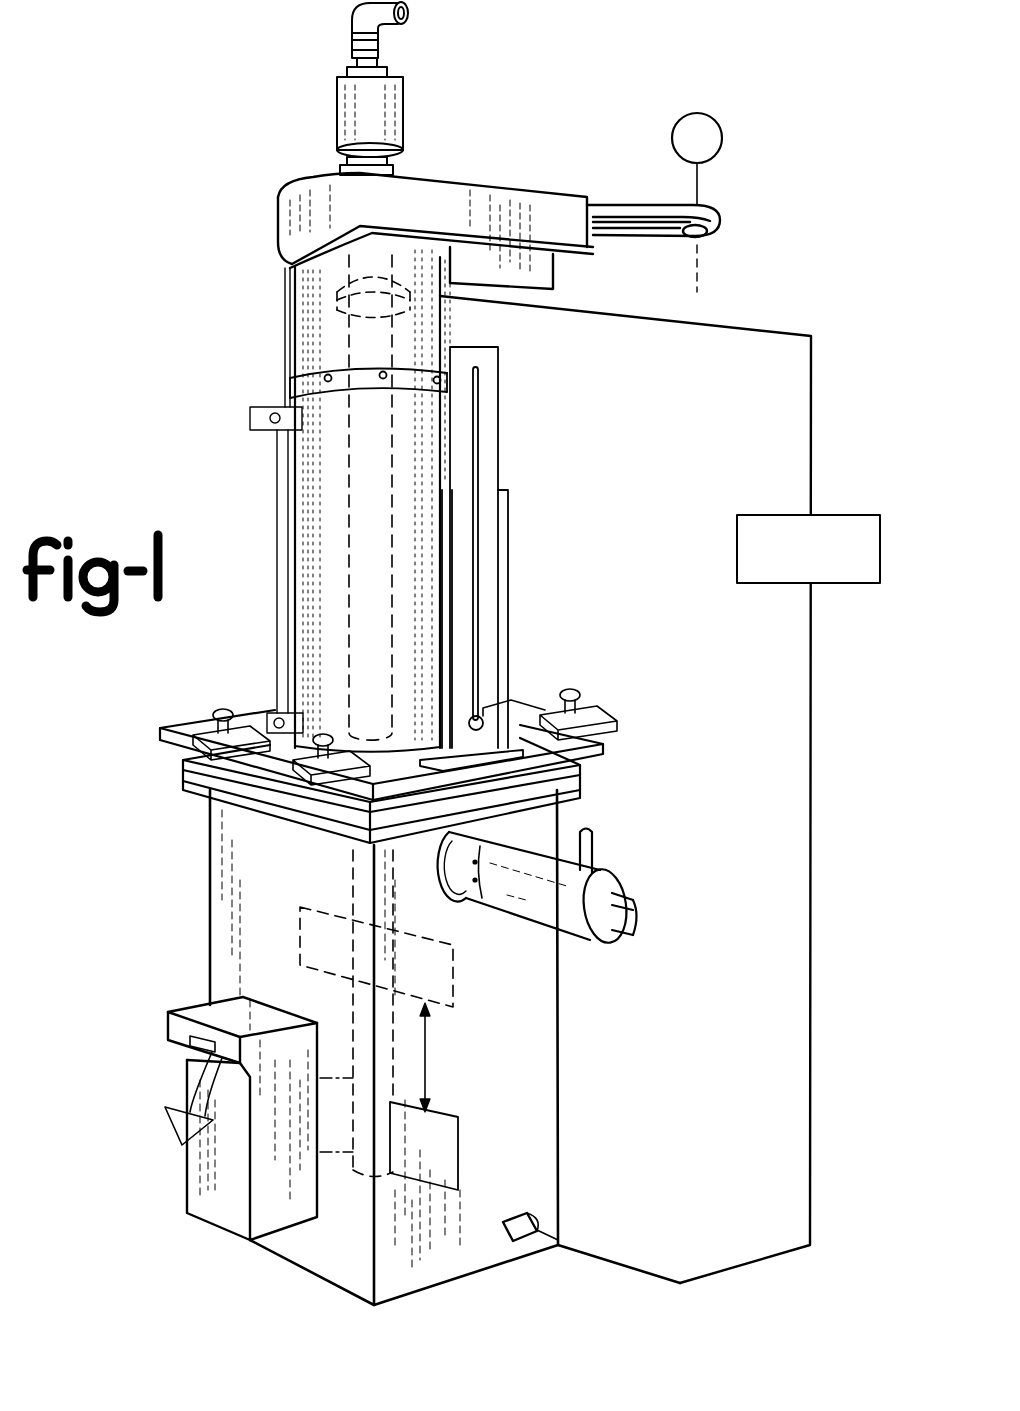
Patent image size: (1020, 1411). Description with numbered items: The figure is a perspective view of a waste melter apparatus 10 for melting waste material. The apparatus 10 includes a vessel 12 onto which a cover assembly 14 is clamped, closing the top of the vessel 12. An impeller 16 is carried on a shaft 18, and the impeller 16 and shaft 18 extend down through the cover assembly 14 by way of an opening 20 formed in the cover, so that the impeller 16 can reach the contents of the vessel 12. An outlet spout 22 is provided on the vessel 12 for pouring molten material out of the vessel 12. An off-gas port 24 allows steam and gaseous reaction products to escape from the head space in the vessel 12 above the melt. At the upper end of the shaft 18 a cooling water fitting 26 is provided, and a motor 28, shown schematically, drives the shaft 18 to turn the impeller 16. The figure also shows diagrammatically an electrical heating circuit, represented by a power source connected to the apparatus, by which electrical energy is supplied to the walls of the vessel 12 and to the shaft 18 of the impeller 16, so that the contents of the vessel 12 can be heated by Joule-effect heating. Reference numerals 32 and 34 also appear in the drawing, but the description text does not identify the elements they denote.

The waste melter apparatus 10 is at (665, 520).
The vessel 12 is at (527, 1117).
The cover assembly 14 is at (180, 765).
The impeller 16 is at (300, 955).
The shaft 18 is at (340, 337).
The opening 20 is at (370, 733).
The outlet spout 22 is at (193, 1047).
The off-gas port 24 is at (625, 872).
The cooling water fitting 26 is at (358, 23).
The motor 28 is at (722, 137).
The hydraulic cylinder 32 is at (272, 560).
The cylinder head 34 is at (285, 290).